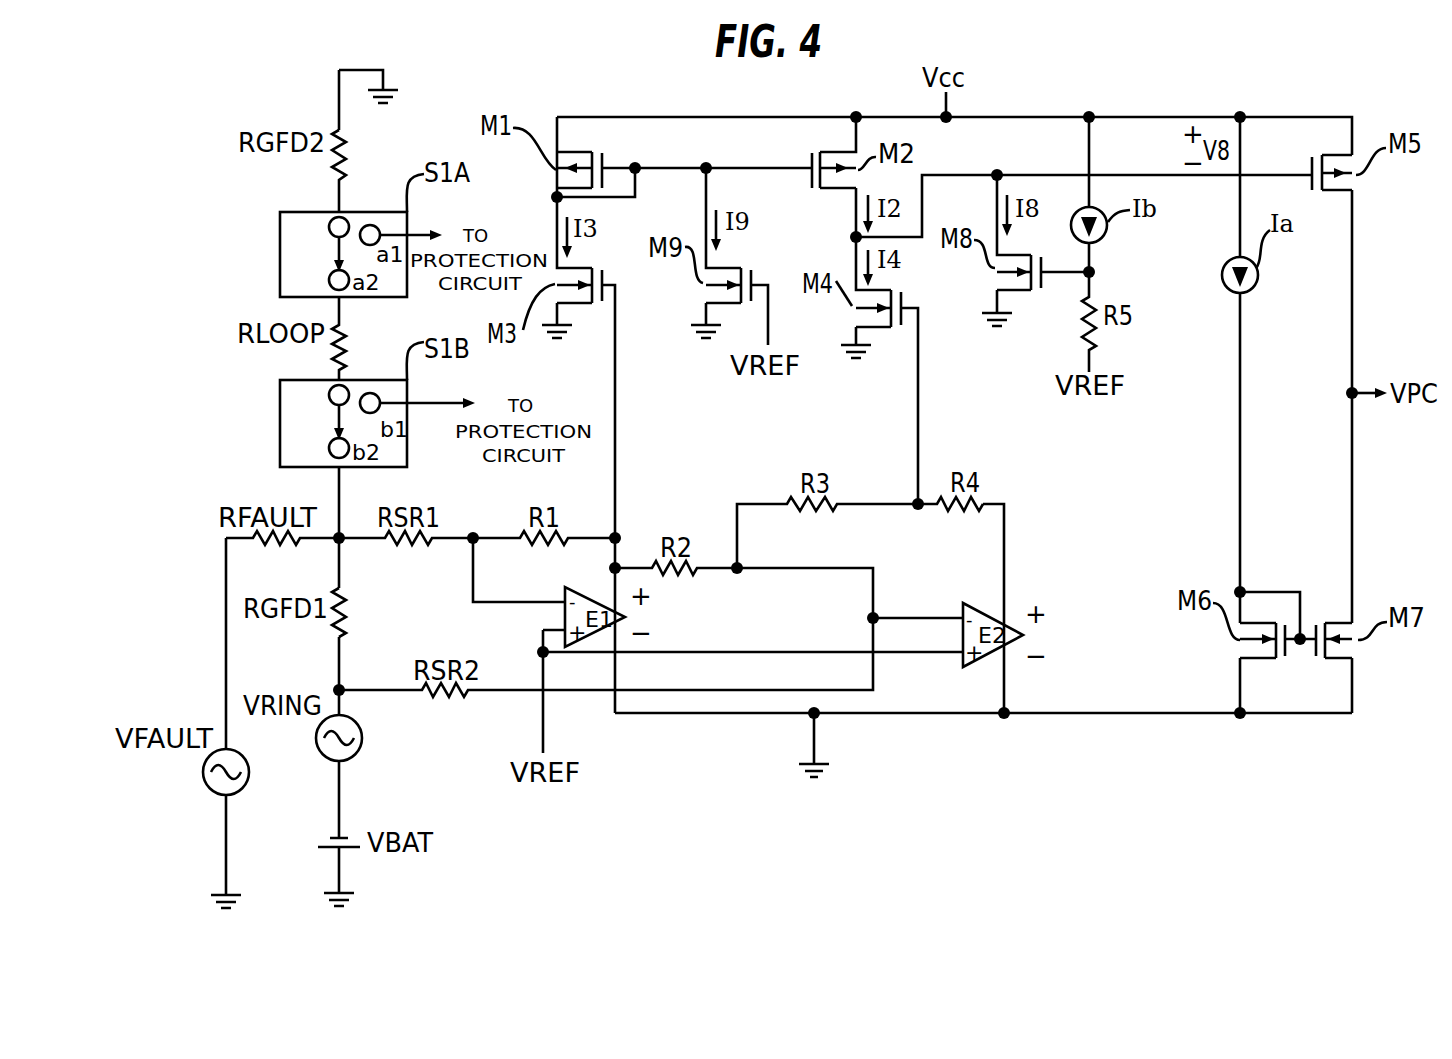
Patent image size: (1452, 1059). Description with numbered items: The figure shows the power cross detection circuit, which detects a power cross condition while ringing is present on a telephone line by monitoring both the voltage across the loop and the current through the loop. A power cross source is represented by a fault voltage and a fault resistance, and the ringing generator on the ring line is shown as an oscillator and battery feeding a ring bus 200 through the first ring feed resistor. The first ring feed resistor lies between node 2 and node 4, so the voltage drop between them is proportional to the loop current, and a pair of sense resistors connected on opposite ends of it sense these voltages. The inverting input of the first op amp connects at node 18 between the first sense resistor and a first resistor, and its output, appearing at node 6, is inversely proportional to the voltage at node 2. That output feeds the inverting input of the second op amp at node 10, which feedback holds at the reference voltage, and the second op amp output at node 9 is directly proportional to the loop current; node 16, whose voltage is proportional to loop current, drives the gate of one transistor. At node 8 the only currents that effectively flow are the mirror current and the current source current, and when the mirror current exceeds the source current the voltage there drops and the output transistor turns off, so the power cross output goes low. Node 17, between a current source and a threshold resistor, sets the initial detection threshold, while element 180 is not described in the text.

The node 2 is at (337, 532).
The node 4 is at (336, 690).
The node 6 is at (618, 535).
The node 8 is at (853, 237).
The node 9 is at (1006, 522).
The node 10 is at (876, 615).
The node 16 is at (916, 500).
The node 17 is at (1095, 270).
The node 18 is at (473, 532).
The ground fault detection resistor RGFD1 180 is at (372, 612).
The ring bus 200 is at (370, 786).